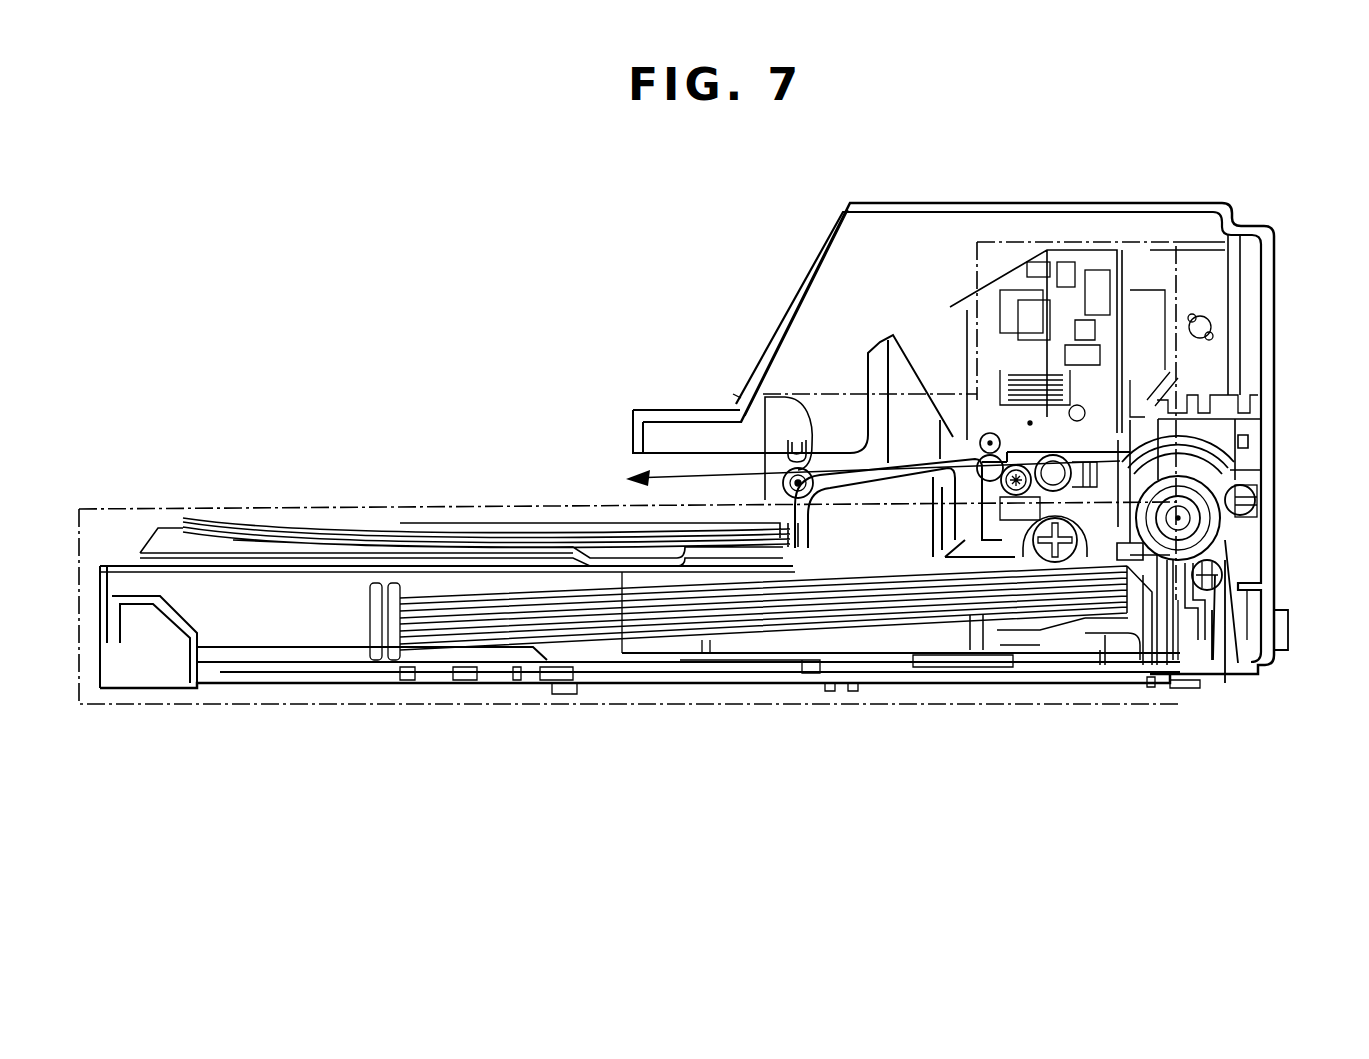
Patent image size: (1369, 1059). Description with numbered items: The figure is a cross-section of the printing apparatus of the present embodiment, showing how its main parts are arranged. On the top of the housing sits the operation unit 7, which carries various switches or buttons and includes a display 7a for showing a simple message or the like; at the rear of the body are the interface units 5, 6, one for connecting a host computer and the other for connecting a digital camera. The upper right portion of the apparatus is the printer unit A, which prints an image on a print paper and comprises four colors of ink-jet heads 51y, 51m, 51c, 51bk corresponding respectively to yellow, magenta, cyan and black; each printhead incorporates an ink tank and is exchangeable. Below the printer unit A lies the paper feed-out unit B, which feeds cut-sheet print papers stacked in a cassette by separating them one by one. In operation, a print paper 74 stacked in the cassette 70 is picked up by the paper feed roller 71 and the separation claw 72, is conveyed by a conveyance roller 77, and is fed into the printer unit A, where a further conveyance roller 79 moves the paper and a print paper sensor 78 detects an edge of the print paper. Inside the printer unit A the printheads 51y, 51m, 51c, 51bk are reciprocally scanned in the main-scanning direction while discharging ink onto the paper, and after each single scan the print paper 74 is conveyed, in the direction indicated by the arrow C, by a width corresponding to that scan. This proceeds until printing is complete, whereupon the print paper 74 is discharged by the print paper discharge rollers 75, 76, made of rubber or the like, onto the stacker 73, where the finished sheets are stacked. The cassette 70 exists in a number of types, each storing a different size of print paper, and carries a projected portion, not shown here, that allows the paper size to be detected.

The operation unit 7 is at (823, 222).
The display 7a is at (796, 313).
The yellow ink-jet head 51y is at (1010, 280).
The magenta ink-jet head 51m is at (1064, 372).
The cyan ink-jet head 51c is at (1194, 394).
The black ink-jet head 51bk is at (1171, 330).
The printer unit A is at (1183, 288).
The paper feed-out unit B is at (960, 700).
The arrow indicating paper conveyance direction C is at (612, 470).
The cassette 70 is at (330, 660).
The paper feed roller 71 is at (1075, 555).
The separation claw 72 is at (1148, 566).
The stacker 73 is at (600, 550).
The print paper 74 is at (877, 617).
The print paper discharge roller 75 is at (795, 448).
The print paper discharge roller 76 is at (787, 455).
The conveyance roller 77 is at (1215, 543).
The print paper sensor 78 is at (1125, 447).
The conveyance roller 79 is at (1128, 458).
The interface unit 5 is at (1283, 640).
The interface unit 6 is at (1212, 625).